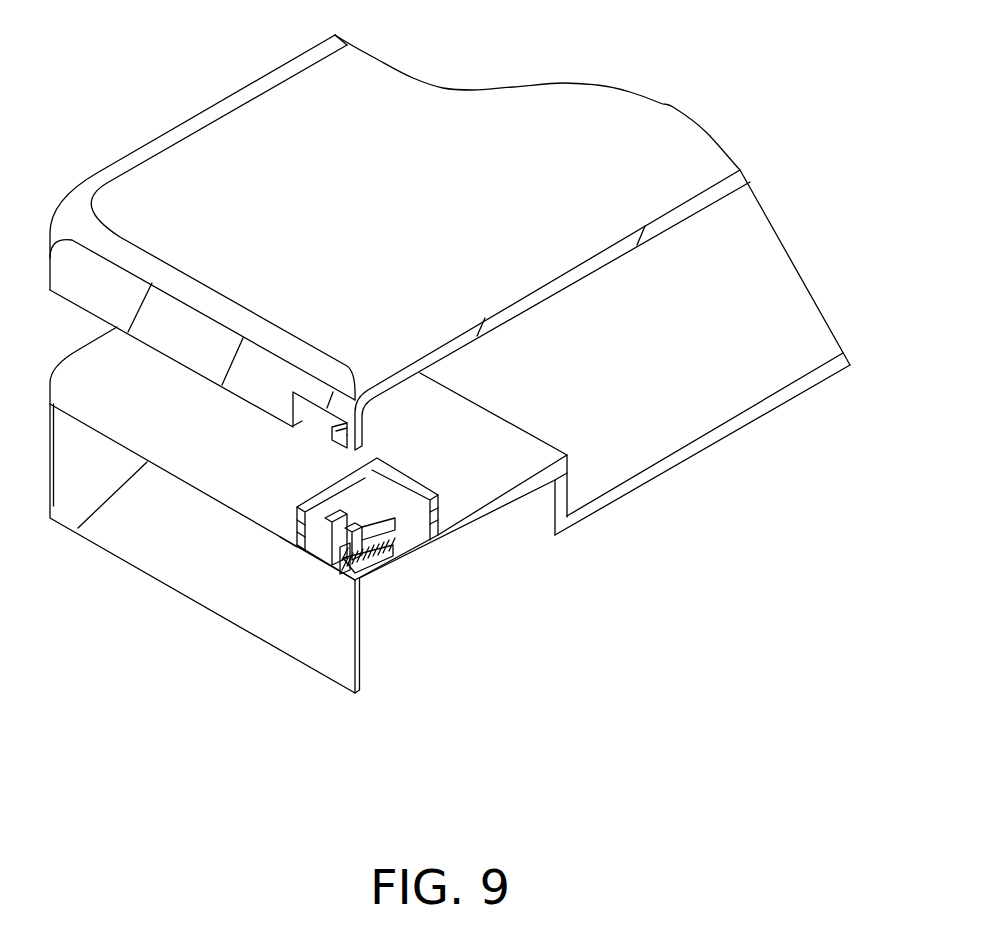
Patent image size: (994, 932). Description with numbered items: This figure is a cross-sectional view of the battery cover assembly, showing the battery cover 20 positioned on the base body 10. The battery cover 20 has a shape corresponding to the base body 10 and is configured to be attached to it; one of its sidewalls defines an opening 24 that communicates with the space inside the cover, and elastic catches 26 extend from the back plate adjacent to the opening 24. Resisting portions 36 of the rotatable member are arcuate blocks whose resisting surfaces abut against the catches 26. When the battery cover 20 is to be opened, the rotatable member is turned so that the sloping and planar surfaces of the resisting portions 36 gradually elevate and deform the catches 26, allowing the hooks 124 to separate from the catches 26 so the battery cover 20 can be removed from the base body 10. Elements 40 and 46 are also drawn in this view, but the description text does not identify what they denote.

The base body 10 is at (73, 500).
The battery cover 20 is at (493, 127).
The opening 24 is at (302, 421).
The elastic catches 26 is at (335, 441).
The resisting portions 36 is at (362, 582).
The connector 40 is at (408, 494).
The insulative block 46 is at (365, 530).
The hooks 124 is at (332, 537).